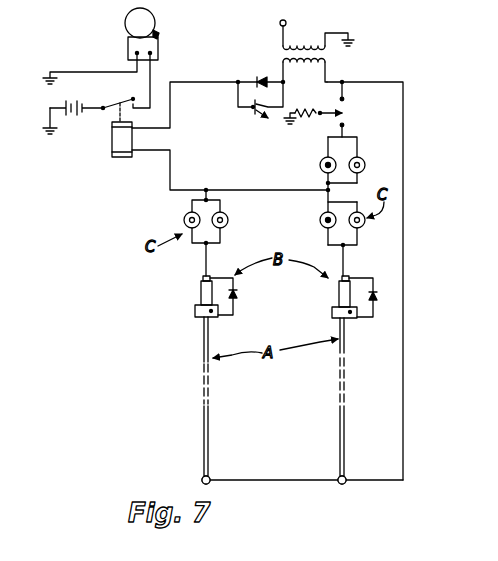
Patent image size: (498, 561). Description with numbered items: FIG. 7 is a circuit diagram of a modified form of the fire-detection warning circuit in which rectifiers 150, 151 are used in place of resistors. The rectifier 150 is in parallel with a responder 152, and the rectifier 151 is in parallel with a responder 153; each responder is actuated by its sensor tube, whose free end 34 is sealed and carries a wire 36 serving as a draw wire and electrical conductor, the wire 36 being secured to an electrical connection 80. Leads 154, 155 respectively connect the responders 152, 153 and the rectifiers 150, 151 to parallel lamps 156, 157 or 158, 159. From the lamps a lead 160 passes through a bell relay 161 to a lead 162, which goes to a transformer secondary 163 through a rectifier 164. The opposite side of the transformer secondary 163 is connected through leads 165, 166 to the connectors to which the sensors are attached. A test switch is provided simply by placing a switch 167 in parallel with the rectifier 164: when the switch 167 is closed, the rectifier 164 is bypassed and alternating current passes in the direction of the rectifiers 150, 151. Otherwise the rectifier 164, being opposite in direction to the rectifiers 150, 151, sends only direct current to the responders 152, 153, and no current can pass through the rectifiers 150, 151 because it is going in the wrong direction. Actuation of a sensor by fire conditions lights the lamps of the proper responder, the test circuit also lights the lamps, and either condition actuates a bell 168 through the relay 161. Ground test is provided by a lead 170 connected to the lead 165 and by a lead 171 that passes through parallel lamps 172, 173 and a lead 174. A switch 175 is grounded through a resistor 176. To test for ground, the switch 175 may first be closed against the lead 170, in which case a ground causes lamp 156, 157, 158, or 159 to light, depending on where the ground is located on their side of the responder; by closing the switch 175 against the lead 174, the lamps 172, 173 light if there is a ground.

The free end of the tube 34 is at (204, 466).
The wire 36 is at (210, 476).
The electrical connection 80 is at (209, 483).
The rectifier 150 is at (377, 292).
The rectifier 151 is at (238, 292).
The responder 152 is at (332, 312).
The responder 153 is at (195, 310).
The lead 154 is at (346, 253).
The lead 155 is at (204, 262).
The lamp 156 is at (365, 224).
The lamp 157 is at (319, 224).
The lamp 158 is at (230, 217).
The lamp 159 is at (184, 218).
The lead 160 is at (179, 189).
The bell relay 161 is at (112, 146).
The lead 162 is at (203, 82).
The transformer secondary 163 is at (293, 66).
The rectifier 164 is at (269, 67).
The lead 165 is at (404, 141).
The lead 166 is at (288, 482).
The switch 167 is at (262, 115).
The bell 168 is at (125, 22).
The lead 170 is at (347, 100).
The lead 171 is at (323, 183).
The lamp 172 is at (365, 162).
The lamp 173 is at (320, 165).
The lead 174 is at (349, 127).
The switch 175 is at (330, 112).
The resistor 176 is at (307, 116).